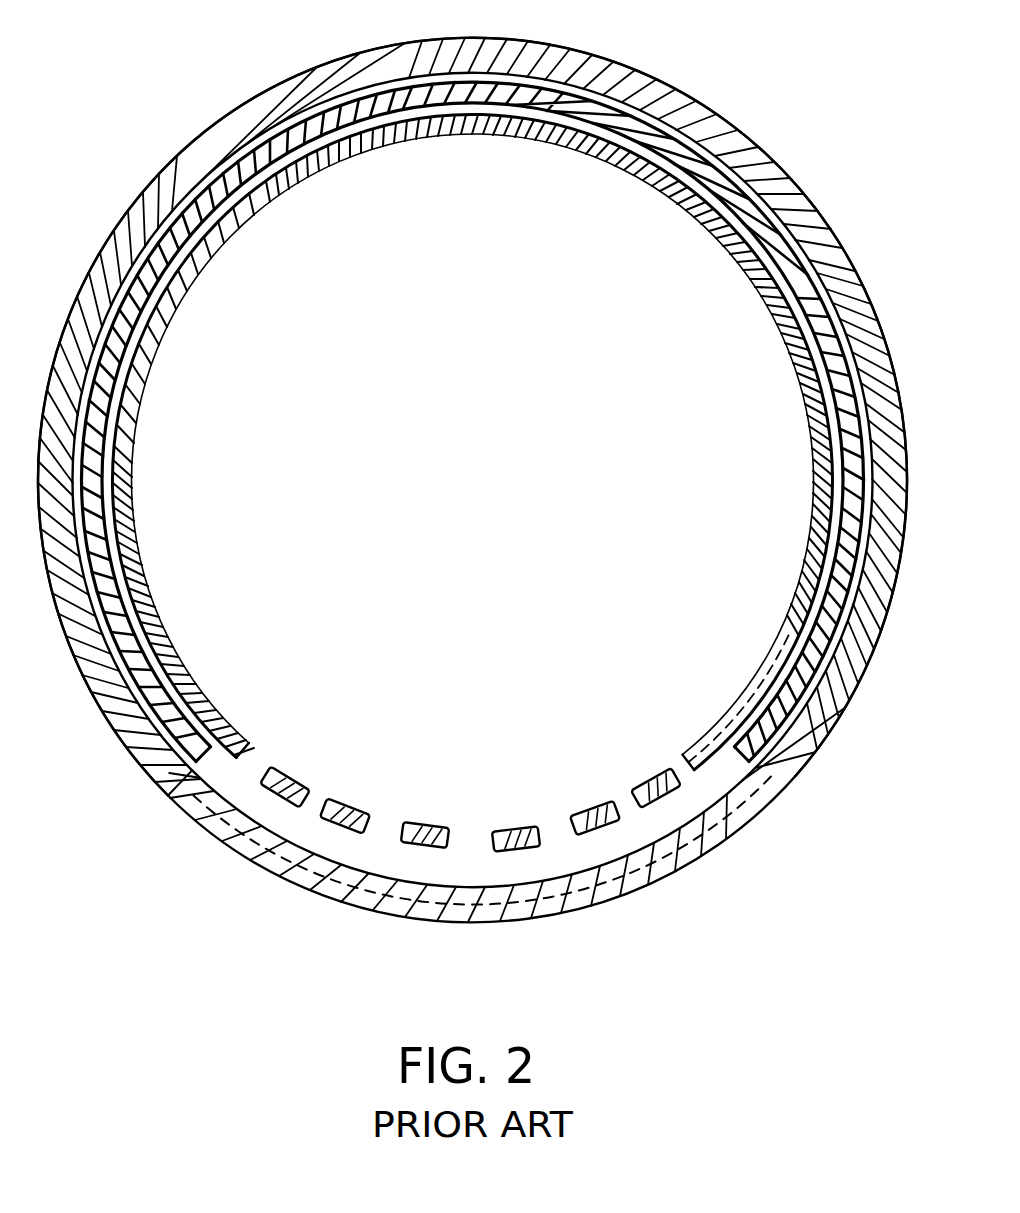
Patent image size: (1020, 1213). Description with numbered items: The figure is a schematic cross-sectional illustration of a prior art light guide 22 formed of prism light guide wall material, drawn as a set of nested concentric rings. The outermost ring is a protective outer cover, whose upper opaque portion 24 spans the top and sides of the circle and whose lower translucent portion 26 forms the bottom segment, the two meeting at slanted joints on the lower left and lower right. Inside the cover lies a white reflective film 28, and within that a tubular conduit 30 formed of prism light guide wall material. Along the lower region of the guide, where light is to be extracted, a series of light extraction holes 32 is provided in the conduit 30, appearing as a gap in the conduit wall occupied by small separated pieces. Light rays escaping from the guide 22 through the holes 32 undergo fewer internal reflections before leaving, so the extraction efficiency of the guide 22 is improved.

The light guide 22 is at (795, 103).
The upper opaque portion 24 is at (223, 117).
The lower translucent portion 26 is at (332, 898).
The white reflective film 28 is at (790, 240).
The tubular conduit 30 is at (808, 542).
The light extraction holes 32 is at (268, 767).